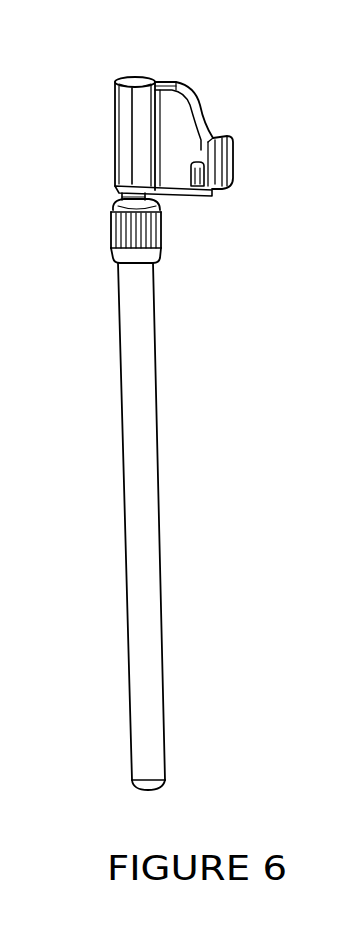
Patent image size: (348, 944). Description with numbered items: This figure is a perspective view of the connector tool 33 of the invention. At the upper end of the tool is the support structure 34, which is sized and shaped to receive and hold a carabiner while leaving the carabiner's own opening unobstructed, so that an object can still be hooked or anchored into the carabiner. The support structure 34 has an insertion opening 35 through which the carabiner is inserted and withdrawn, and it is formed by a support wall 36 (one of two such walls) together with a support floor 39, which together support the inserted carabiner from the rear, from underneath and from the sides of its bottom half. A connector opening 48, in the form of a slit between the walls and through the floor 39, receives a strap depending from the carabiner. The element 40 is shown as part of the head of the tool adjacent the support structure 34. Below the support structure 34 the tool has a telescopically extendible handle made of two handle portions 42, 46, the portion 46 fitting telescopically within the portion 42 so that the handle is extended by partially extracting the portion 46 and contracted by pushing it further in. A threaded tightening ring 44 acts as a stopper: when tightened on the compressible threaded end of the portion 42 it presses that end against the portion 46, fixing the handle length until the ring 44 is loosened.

The connector tool 33 is at (252, 210).
The support structure 34 is at (202, 83).
The insertion opening 35 is at (201, 128).
The support wall 36 is at (212, 198).
The support floor 39 is at (174, 197).
The cylindrical body 40 is at (115, 112).
The handle portion 42 is at (156, 416).
The threaded tightening ring 44 is at (112, 230).
The handle portion 46 is at (126, 196).
The connector opening 48 is at (233, 176).